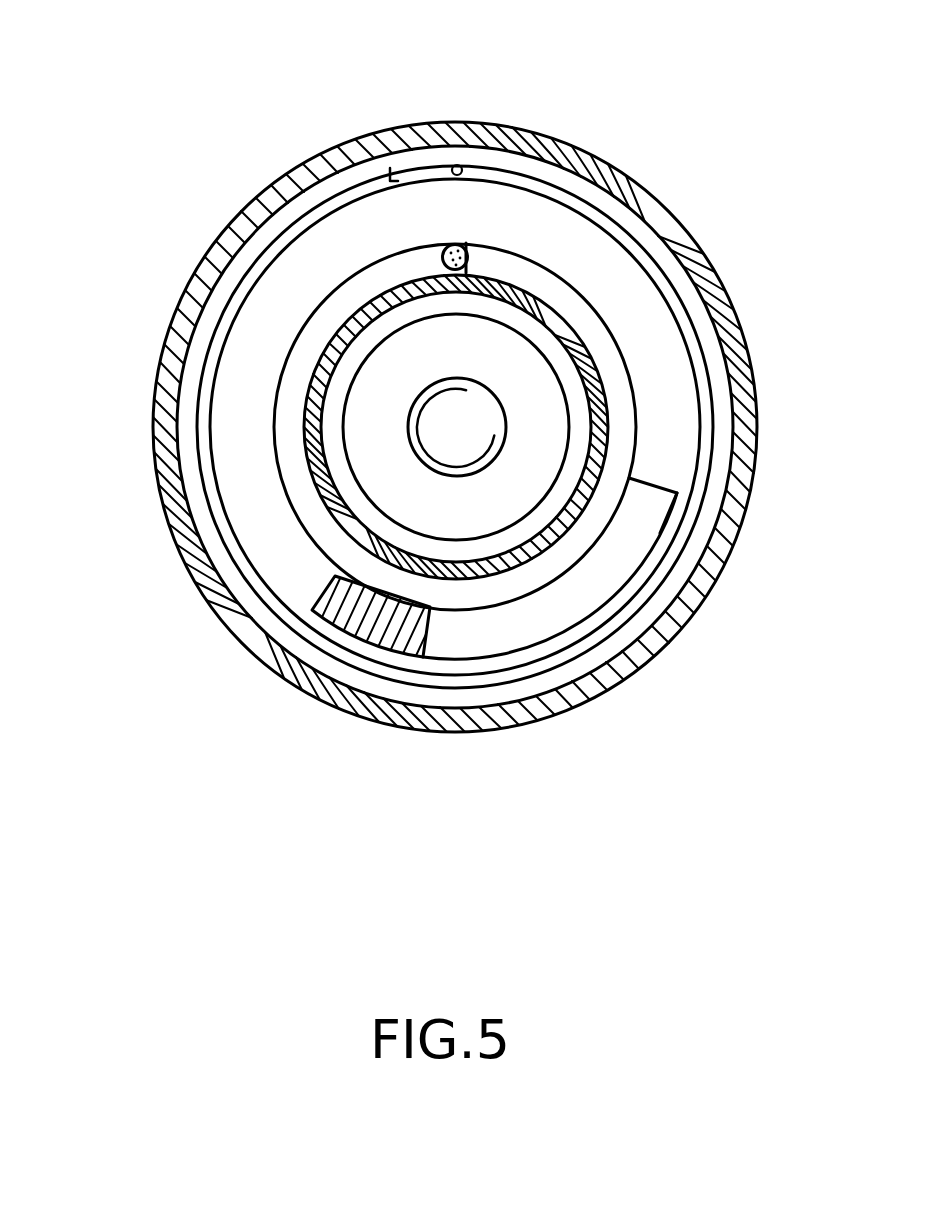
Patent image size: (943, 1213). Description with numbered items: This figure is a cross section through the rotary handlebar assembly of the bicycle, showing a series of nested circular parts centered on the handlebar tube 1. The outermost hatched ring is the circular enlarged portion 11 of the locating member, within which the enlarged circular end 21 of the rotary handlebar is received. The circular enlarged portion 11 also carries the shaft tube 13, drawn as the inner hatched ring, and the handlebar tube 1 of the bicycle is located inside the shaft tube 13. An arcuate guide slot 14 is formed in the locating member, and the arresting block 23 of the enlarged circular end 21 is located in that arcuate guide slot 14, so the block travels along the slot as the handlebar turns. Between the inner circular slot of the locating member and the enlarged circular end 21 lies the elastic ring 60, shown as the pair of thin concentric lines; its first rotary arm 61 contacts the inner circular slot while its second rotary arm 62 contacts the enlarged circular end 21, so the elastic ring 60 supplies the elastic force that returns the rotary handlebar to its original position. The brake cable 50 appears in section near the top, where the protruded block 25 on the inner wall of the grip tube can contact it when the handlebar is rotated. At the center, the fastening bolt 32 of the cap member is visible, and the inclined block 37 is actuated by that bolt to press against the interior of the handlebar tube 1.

The handlebar tube 1 is at (362, 496).
The circular enlarged portion 11 is at (610, 690).
The shaft tube 13 is at (307, 410).
The arcuate guide slot 14 is at (658, 532).
The enlarged circular end 21 is at (670, 402).
The arresting block 23 is at (372, 632).
The protruded block 25 is at (593, 329).
The fastening bolt 32 is at (420, 438).
The inclined block 37 is at (362, 385).
The brake cable 50 is at (466, 243).
The elastic ring 60 is at (566, 192).
The first rotary arm 61 is at (444, 165).
The second rotary arm 62 is at (390, 176).